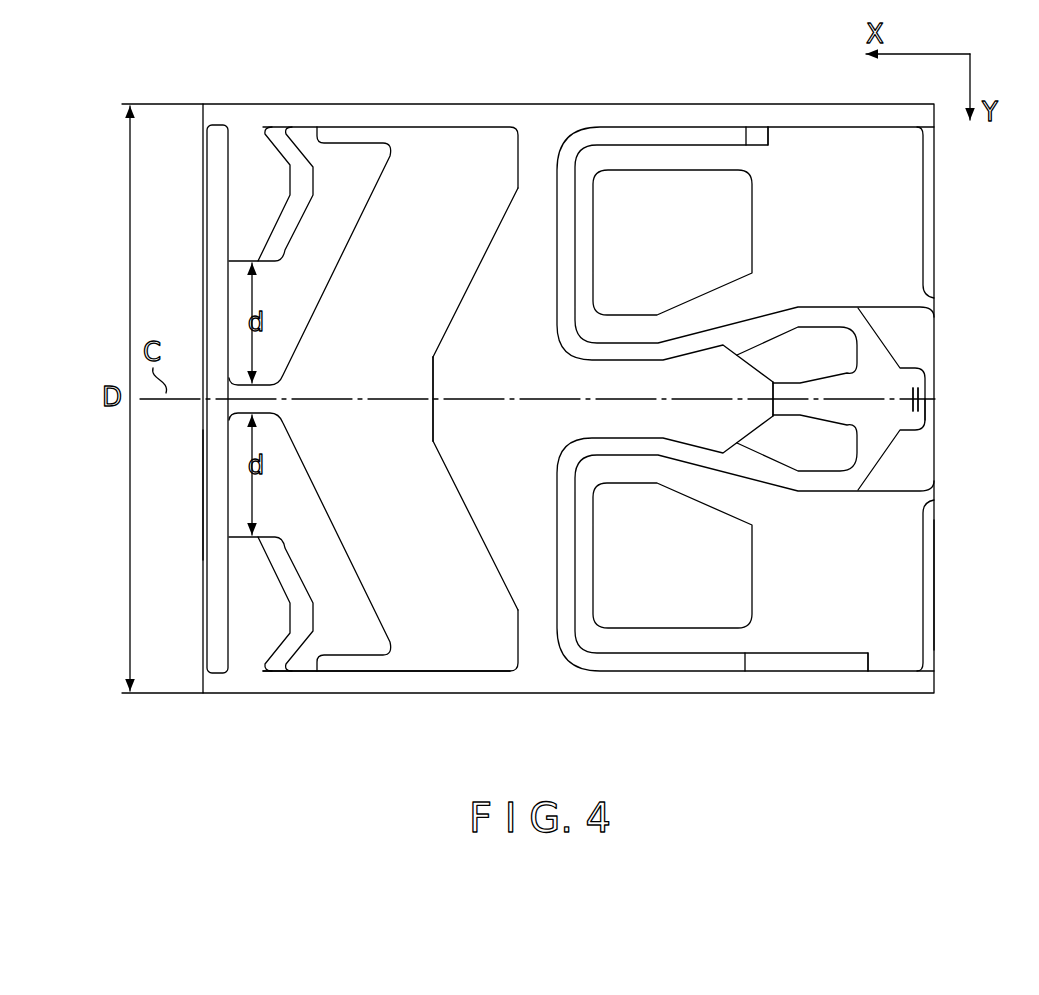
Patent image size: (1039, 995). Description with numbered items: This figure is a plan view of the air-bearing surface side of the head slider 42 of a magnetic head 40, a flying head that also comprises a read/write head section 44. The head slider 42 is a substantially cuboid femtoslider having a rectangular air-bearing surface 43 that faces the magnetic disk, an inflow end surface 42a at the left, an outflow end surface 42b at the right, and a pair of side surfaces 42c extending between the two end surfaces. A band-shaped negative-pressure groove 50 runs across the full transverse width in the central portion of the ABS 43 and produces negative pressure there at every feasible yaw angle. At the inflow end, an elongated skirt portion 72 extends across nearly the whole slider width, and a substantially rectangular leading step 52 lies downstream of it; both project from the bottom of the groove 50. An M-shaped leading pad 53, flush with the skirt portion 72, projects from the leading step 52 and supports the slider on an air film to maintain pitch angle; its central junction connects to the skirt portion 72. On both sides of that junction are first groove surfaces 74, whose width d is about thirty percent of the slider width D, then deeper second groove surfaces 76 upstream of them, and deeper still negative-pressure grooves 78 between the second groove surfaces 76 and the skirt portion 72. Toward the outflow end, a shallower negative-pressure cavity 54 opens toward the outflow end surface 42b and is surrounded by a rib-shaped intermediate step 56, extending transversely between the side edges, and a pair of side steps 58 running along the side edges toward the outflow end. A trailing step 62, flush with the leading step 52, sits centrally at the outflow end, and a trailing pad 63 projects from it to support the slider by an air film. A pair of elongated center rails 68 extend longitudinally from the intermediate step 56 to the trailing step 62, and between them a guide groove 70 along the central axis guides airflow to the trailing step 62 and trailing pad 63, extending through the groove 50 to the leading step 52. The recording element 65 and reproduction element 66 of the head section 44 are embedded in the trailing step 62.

The magnetic head 40 is at (582, 70).
The head slider 42 is at (421, 103).
The inflow end surface 42a is at (204, 490).
The outflow end surface 42b is at (935, 583).
The side surfaces 42c is at (713, 103).
The air-bearing surface 43 is at (480, 158).
The read/write head section 44 is at (935, 418).
The negative-pressure groove 50 is at (466, 446).
The leading step 52 is at (456, 678).
The leading pad 53 is at (445, 298).
The negative-pressure cavity 54 is at (810, 167).
The intermediate step 56 is at (562, 250).
The side steps 58 is at (640, 137).
The trailing step 62 is at (926, 468).
The trailing pad 63 is at (878, 368).
The recording element 65 is at (925, 393).
The reproduction element 66 is at (915, 399).
The center rails 68 is at (632, 352).
The guide groove 70 is at (622, 382).
The skirt portion 72 is at (206, 240).
The first groove surfaces 74 is at (312, 287).
The second groove surfaces 76 is at (300, 210).
The negative-pressure grooves 78 is at (245, 167).